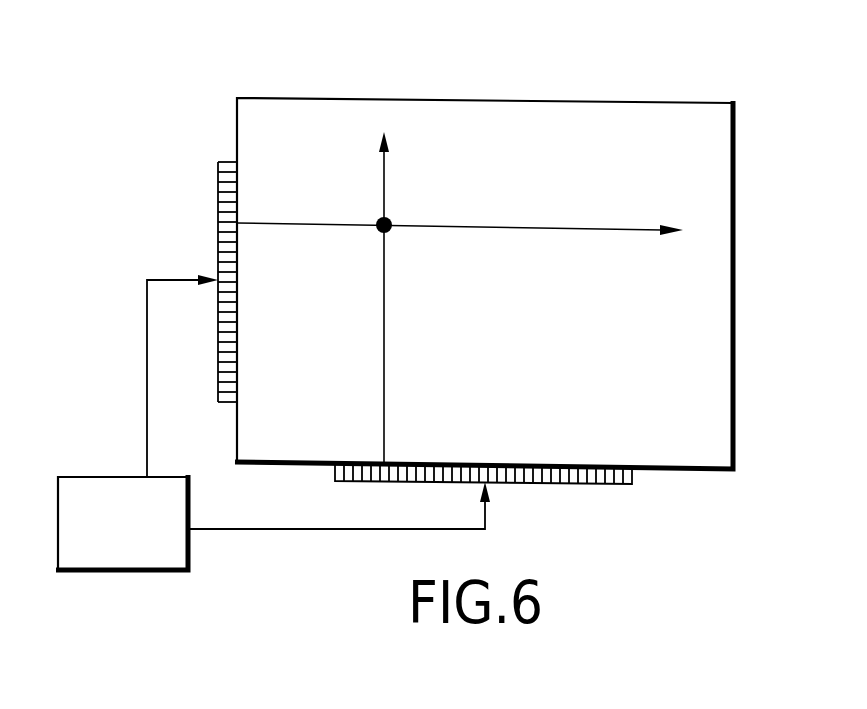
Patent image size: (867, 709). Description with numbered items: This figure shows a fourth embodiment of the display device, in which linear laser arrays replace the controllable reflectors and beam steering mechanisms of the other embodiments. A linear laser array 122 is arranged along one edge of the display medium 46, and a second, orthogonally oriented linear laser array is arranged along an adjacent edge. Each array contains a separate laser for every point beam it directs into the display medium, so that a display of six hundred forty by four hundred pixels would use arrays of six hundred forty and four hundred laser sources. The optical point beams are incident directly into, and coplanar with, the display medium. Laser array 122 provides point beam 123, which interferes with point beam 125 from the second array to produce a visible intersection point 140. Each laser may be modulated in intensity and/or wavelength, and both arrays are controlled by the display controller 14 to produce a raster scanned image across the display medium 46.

The detector plate 46 is at (623, 103).
The linear laser array 122 is at (218, 174).
The point beam 123 is at (542, 227).
The point beam 125 is at (384, 330).
The origin point 140 is at (390, 219).
The display controller 14 is at (128, 530).